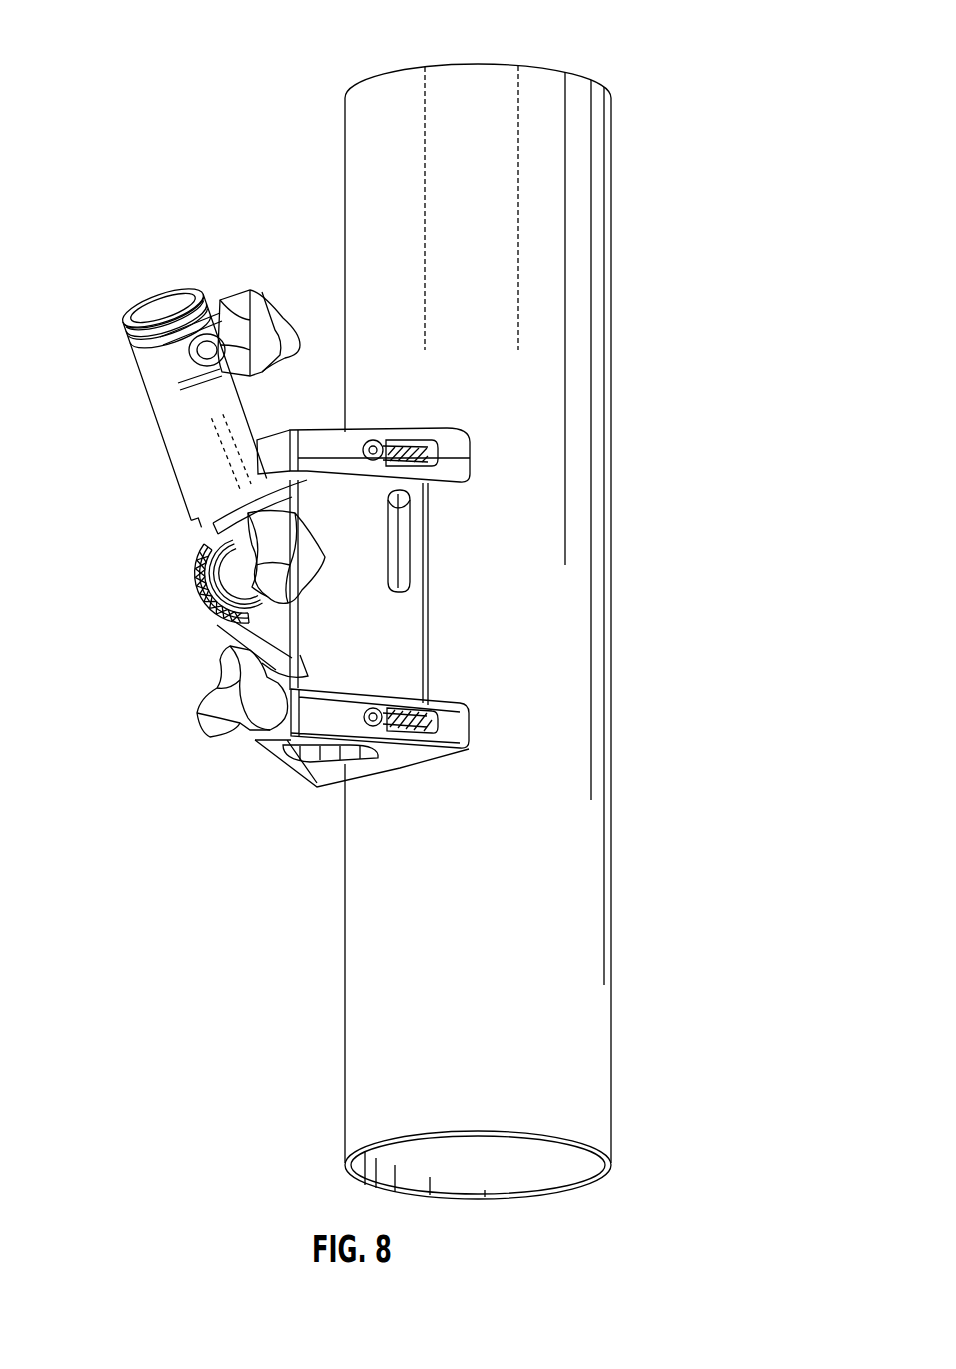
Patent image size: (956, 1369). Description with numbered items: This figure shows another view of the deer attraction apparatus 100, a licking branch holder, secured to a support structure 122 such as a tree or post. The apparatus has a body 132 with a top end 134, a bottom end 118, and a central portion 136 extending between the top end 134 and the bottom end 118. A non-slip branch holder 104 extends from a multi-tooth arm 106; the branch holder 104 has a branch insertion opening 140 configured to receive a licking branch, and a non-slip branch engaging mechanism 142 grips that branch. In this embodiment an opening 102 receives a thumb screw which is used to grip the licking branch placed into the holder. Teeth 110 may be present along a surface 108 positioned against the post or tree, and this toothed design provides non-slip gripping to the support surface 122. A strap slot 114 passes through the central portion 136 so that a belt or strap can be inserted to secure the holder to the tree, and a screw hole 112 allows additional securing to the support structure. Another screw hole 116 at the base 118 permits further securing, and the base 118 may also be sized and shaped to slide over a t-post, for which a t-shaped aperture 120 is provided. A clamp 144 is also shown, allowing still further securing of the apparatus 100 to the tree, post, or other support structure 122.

The deer attraction apparatus 100 is at (148, 43).
The opening 102 is at (160, 303).
The non-slip branch holder 104 is at (150, 400).
The multi-tooth arm 106 is at (198, 578).
The surface 108 is at (412, 430).
The teeth 110 is at (435, 757).
The screw hole 112 is at (440, 455).
The strap slot 114 is at (395, 548).
The screw hole 116 is at (458, 707).
The bottom end 118 is at (285, 752).
The t-shaped aperture 120 is at (330, 768).
The support structure 122 is at (613, 176).
The body 132 is at (330, 416).
The top end 134 is at (375, 438).
The central portion 136 is at (412, 613).
The branch insertion opening 140 is at (165, 300).
The non-slip branch engaging mechanism 142 is at (150, 338).
The clamp 144 is at (210, 692).